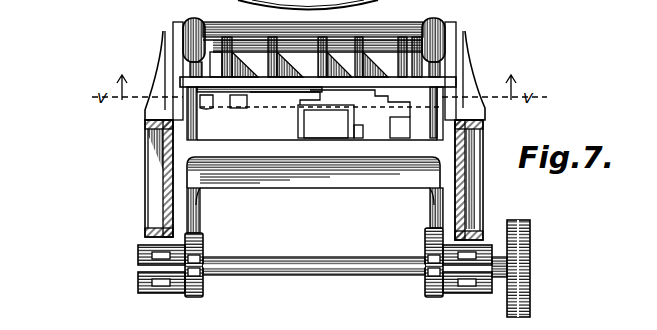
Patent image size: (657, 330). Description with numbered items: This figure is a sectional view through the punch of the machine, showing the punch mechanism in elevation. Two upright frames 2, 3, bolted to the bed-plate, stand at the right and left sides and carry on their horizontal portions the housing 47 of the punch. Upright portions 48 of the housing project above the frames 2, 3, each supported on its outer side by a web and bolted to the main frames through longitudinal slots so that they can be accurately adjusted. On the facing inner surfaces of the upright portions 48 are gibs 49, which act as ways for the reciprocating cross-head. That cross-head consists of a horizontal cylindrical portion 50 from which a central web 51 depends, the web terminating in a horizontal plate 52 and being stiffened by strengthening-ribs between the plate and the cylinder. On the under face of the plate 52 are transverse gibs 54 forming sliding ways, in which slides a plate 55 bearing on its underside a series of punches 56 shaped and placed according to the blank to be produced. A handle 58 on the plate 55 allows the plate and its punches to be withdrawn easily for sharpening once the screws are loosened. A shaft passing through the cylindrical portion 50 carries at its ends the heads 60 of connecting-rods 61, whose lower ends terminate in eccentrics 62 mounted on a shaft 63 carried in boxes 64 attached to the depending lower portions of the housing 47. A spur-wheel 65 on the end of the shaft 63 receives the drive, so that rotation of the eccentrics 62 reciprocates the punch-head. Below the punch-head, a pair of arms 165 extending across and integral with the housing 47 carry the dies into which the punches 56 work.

The upright frame 2 is at (483, 183).
The upright frame 3 is at (145, 184).
The housing 47 is at (315, 196).
The upright portions 48 is at (173, 31).
The gibs 49 is at (315, 61).
The horizontal cylindrical portion 50 is at (380, 23).
The central web 51 is at (300, 60).
The horizontal plate 52 is at (440, 84).
The transverse gibs 54 is at (211, 110).
The plate 55 is at (241, 110).
The punches 56 is at (300, 109).
The handle 58 is at (377, 96).
The heads 60 is at (314, 39).
The connecting-rods 61 is at (430, 210).
The eccentrics 62 is at (195, 298).
The shaft 63 is at (306, 256).
The boxes 64 is at (161, 297).
The spur-wheel 65 is at (530, 296).
The arms 165 is at (313, 172).